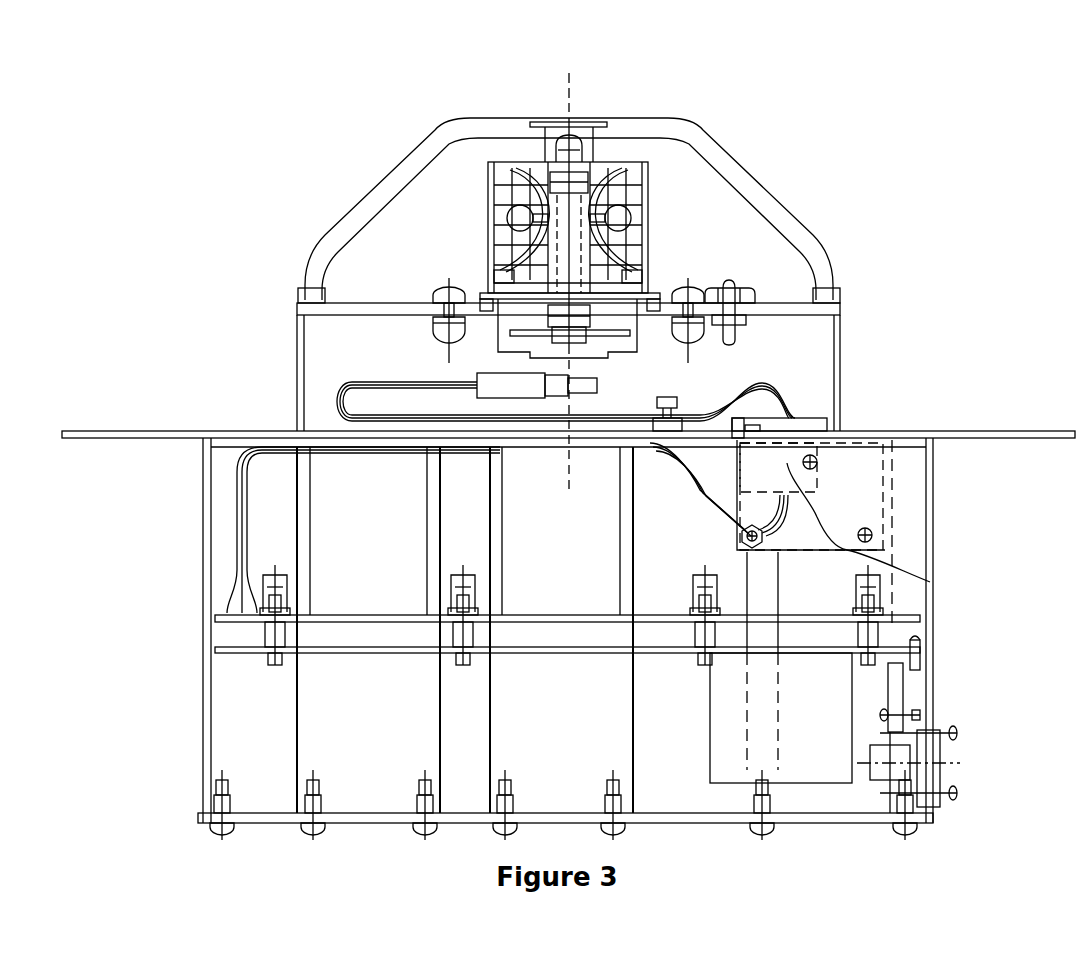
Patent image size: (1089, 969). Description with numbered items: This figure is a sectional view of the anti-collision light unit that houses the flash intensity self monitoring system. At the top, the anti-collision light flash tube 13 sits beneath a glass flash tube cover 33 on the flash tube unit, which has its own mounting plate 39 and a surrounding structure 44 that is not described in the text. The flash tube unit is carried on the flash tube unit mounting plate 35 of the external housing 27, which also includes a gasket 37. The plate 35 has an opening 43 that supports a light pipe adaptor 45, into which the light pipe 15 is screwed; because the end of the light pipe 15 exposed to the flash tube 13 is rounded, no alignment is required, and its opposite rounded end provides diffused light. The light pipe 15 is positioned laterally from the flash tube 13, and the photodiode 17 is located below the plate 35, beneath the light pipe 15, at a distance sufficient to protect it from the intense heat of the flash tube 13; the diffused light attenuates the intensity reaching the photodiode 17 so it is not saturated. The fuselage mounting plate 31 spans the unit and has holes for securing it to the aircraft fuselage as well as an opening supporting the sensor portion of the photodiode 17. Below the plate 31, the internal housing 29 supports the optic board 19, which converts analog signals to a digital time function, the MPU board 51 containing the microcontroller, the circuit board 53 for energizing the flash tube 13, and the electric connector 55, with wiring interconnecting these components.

The anti-collision light flash tube 13 is at (640, 175).
The light pipe 15 is at (727, 280).
The photodiode 17 is at (742, 423).
The optic board 19 is at (800, 528).
The external housing 27 is at (300, 387).
The internal housing 29 is at (200, 597).
The fuselage mounting plate 31 is at (152, 430).
The glass flash tube cover 33 is at (732, 167).
The flash tube unit mounting plate 35 is at (468, 297).
The gasket 37 is at (302, 288).
The mounting plate 39 is at (398, 308).
The opening 43 is at (742, 318).
The screen housing 44 is at (488, 202).
The light pipe adaptor 45 is at (753, 300).
The MPU board 51 is at (250, 618).
The circuit board 53 is at (333, 655).
The electric connector 55 is at (975, 748).